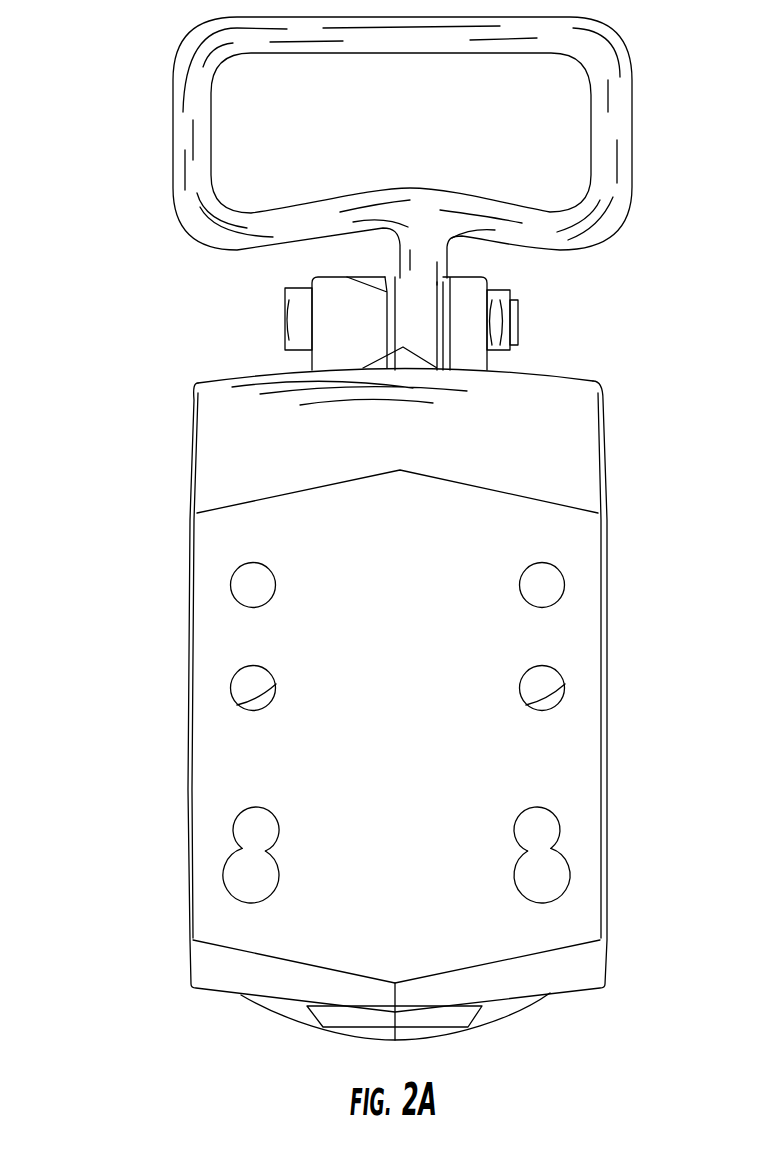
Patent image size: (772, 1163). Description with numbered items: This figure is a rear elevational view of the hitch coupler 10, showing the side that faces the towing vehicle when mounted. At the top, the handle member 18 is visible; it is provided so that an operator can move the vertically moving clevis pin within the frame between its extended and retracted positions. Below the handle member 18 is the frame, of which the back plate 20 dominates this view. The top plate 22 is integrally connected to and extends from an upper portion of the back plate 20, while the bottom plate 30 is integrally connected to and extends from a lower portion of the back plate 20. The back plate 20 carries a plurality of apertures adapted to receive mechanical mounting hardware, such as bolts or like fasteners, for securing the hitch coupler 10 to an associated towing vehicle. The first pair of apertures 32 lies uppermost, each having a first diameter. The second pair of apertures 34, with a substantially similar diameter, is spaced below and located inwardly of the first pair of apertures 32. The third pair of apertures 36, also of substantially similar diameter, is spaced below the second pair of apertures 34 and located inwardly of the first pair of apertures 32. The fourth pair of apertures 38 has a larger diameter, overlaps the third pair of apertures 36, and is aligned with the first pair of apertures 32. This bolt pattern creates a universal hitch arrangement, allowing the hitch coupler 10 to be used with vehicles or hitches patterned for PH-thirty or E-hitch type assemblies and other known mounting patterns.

The hitch coupler 10 is at (150, 314).
The handle member 18 is at (634, 77).
The back plate 20 is at (611, 744).
The top plate 22 is at (546, 377).
The bottom plate 30 is at (513, 999).
The first pair of apertures 32 is at (560, 568).
The second pair of apertures 34 is at (555, 670).
The third pair of apertures 36 is at (556, 818).
The fourth pair of apertures 38 is at (572, 872).